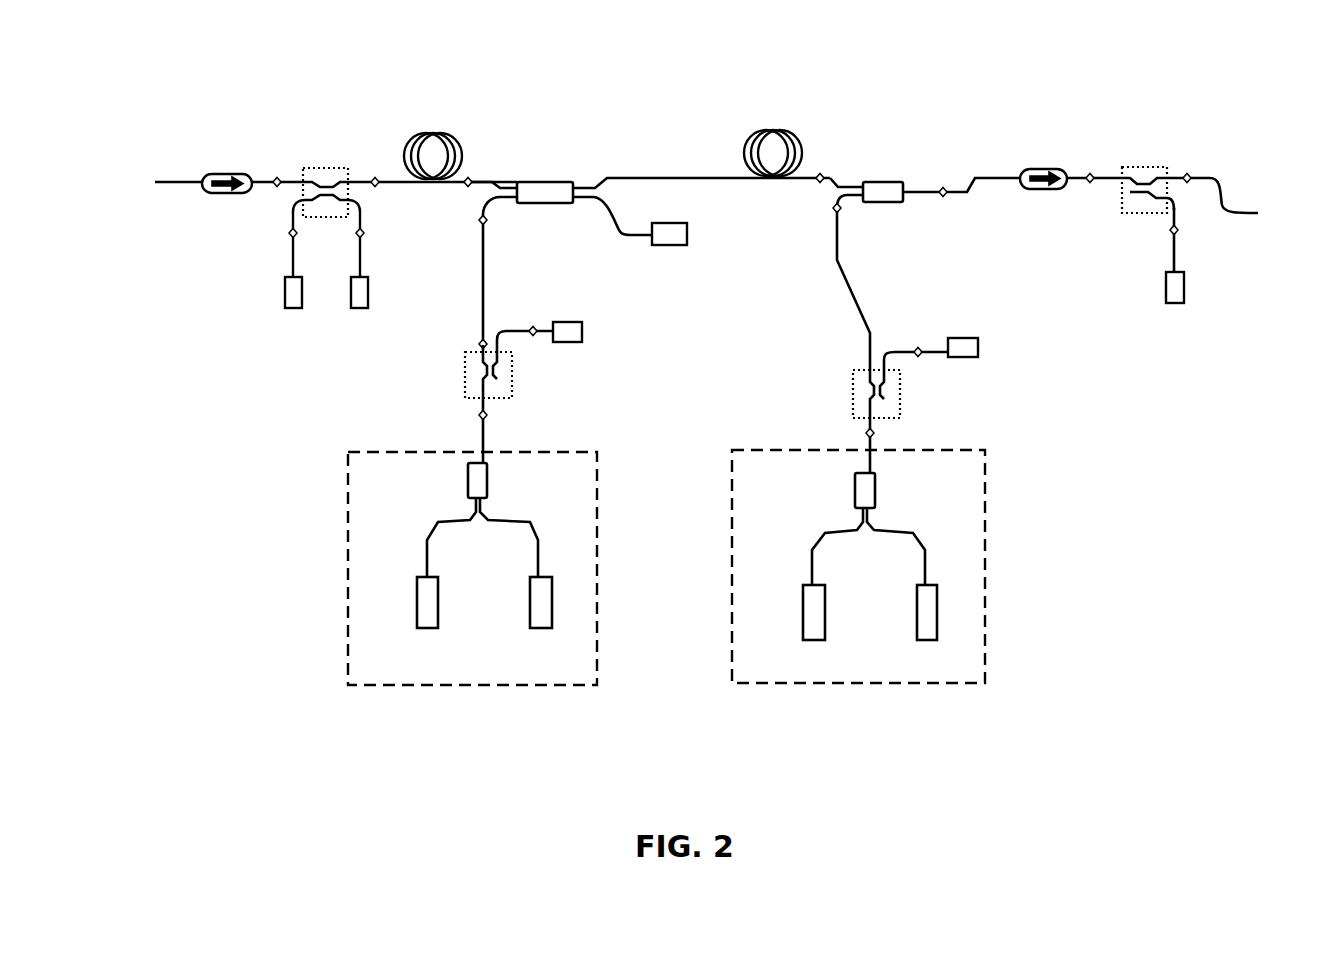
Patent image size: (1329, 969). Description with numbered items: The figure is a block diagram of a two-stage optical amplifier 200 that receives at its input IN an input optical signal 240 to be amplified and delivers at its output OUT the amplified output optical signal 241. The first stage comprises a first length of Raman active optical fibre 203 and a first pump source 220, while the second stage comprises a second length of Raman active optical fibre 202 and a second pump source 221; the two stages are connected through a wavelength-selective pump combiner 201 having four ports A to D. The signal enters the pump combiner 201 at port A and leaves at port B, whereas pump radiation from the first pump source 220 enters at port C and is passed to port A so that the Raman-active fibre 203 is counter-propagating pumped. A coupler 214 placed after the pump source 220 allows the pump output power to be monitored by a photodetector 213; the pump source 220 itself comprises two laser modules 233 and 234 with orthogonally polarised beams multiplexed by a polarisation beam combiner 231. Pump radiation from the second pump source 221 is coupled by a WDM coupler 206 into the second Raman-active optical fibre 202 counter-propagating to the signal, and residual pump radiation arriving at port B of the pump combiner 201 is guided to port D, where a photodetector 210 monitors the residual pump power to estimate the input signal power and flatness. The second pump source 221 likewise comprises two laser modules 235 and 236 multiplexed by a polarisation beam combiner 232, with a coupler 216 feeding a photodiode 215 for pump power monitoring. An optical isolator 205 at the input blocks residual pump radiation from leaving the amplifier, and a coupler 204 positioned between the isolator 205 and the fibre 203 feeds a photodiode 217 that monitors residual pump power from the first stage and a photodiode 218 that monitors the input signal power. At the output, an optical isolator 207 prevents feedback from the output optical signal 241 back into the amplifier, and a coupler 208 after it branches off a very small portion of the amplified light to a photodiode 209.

The two-stage optical amplifier 200 is at (985, 72).
The wavelength-selective pump combiner 201 is at (542, 182).
The second length of Raman active optical fibre 202 is at (780, 130).
The first length of Raman active optical fibre 203 is at (437, 132).
The coupler 204 is at (326, 168).
The optical isolator 205 is at (226, 175).
The WDM coupler 206 is at (880, 182).
The optical isolator 207 is at (1043, 169).
The coupler 208 is at (1138, 167).
The photodiode 209 is at (1175, 303).
The photodetector 210 is at (670, 245).
The photodetector 213 is at (582, 335).
The coupler 214 is at (512, 388).
The photodiode 215 is at (978, 350).
The coupler 216 is at (900, 400).
The photodiode 217 is at (285, 297).
The photodiode 218 is at (351, 308).
The first pump source 220 is at (348, 577).
The second pump source 221 is at (985, 550).
The polarisation beam combiner 231 is at (468, 487).
The polarisation beam combiner 232 is at (875, 495).
The laser module 233 is at (417, 615).
The laser module 234 is at (530, 610).
The laser module 235 is at (803, 632).
The laser module 236 is at (915, 632).
The input optical signal 240 is at (155, 182).
The output optical signal 241 is at (1245, 213).